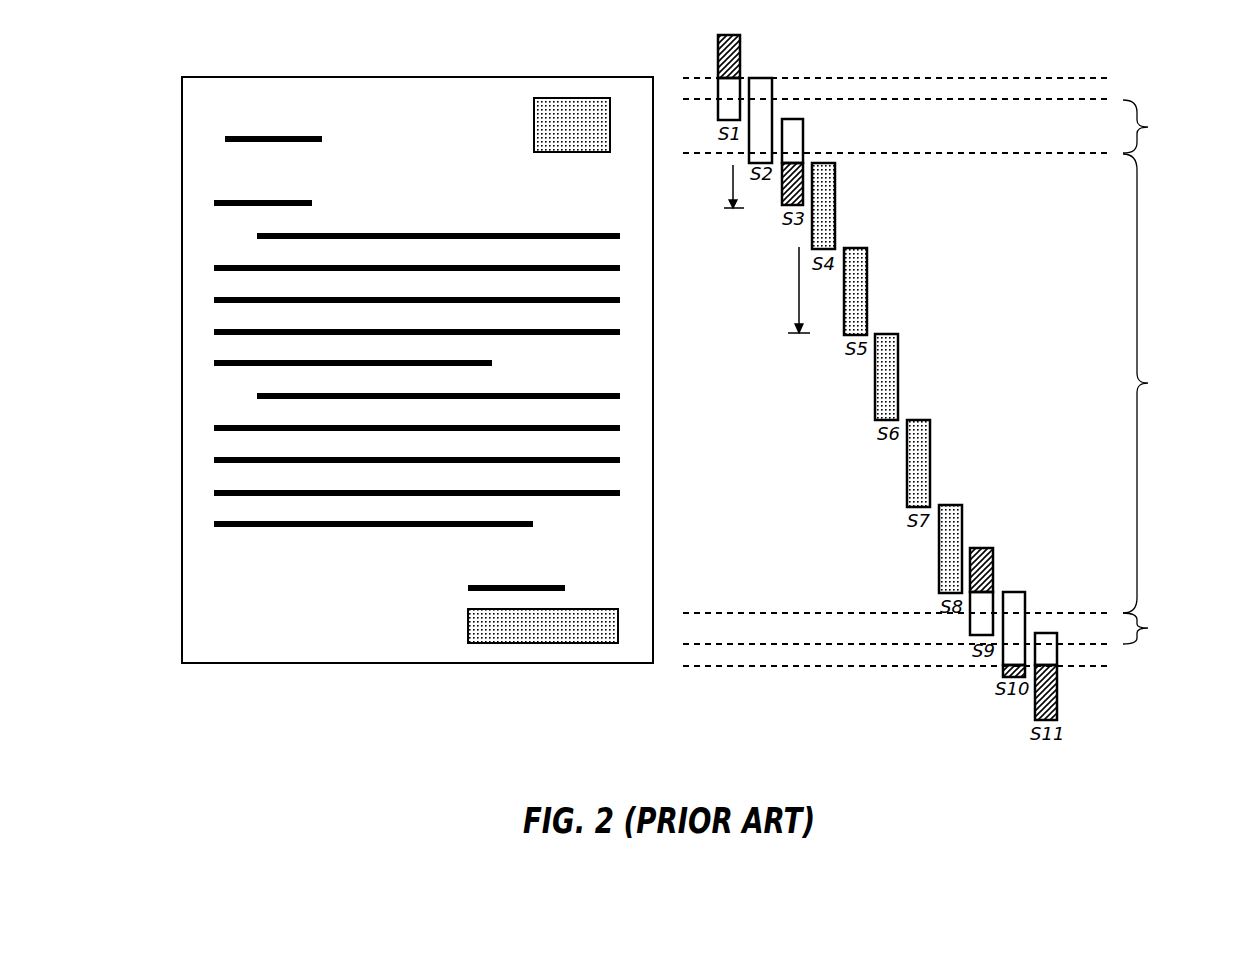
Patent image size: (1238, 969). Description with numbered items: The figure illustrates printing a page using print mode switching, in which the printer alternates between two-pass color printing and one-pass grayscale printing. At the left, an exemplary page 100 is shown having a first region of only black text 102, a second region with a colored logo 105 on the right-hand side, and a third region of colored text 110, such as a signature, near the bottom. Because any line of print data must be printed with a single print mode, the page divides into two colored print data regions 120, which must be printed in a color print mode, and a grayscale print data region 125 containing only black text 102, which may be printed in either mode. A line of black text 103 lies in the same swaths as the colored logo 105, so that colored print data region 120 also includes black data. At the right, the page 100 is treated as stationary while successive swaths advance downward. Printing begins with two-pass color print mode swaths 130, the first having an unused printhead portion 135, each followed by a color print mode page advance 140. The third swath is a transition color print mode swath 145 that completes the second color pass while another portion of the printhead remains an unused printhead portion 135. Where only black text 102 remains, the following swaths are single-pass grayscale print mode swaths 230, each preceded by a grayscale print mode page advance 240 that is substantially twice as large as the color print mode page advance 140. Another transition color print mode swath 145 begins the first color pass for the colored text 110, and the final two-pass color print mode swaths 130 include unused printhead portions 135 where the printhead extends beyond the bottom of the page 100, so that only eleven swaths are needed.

The page 100 is at (415, 77).
The black text 102 is at (415, 235).
The line of black text 103 is at (226, 137).
The colored logo 105 is at (571, 97).
The colored text 110 is at (542, 645).
The colored print data region 120 is at (1163, 372).
The grayscale print data region 125 is at (1163, 383).
The color print mode swath 130 is at (718, 80).
The unused printhead portion 135 is at (742, 38).
The color print mode page advance 140 is at (716, 186).
The transition color print mode swath 145 is at (804, 142).
The grayscale print mode swath 230 is at (842, 190).
The grayscale print mode page advance 240 is at (781, 290).